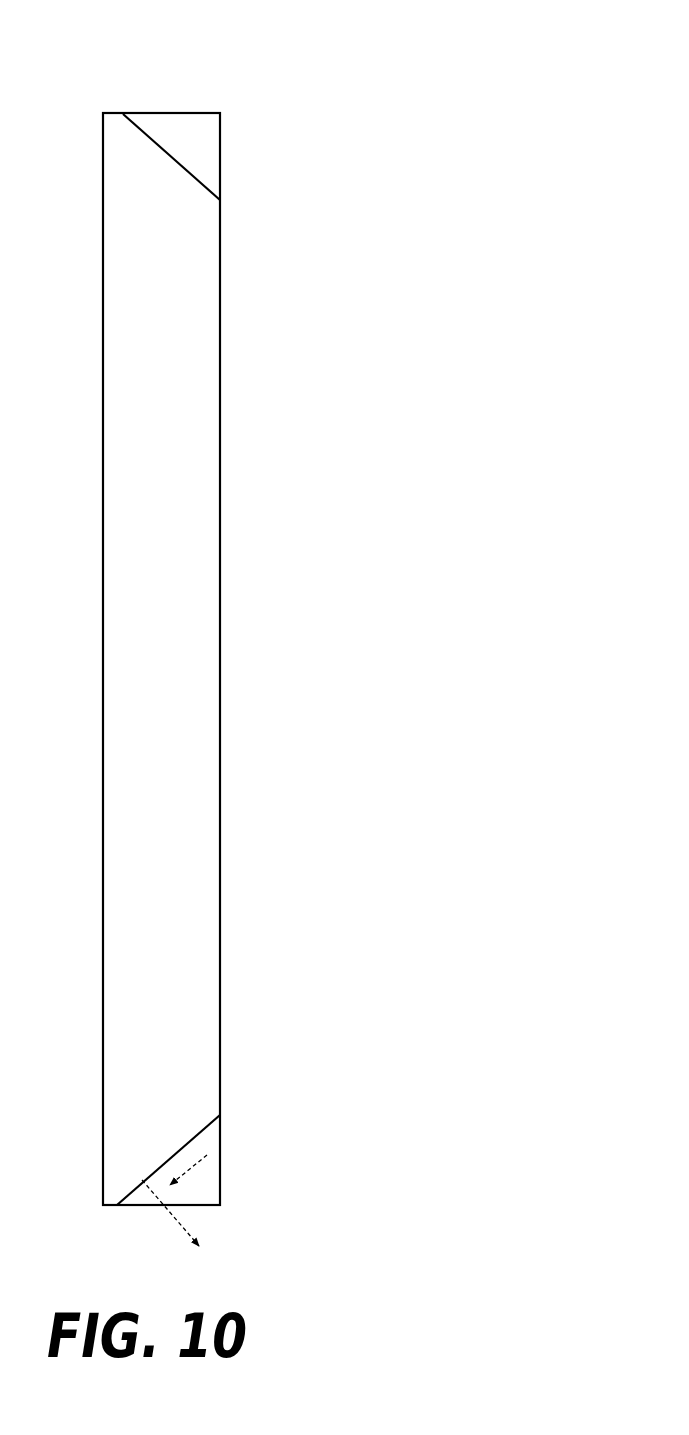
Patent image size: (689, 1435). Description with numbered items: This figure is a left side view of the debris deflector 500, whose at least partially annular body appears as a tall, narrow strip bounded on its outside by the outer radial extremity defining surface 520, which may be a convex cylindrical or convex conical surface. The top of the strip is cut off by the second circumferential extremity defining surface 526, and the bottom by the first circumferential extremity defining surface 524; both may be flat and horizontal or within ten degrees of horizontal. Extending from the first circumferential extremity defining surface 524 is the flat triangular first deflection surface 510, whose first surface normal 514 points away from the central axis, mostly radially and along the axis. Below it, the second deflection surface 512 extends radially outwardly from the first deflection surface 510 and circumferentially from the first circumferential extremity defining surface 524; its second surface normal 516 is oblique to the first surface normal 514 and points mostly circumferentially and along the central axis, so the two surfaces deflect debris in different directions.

The debris deflector 500 is at (296, 109).
The first deflection surface 510 is at (210, 1138).
The second deflection surface 512 is at (131, 1208).
The first surface normal 514 is at (198, 1162).
The second surface normal 516 is at (163, 1206).
The outer radial extremity defining surface 520 is at (142, 737).
The first circumferential extremity defining surface 524 is at (212, 1206).
The second circumferential extremity defining surface 526 is at (154, 112).